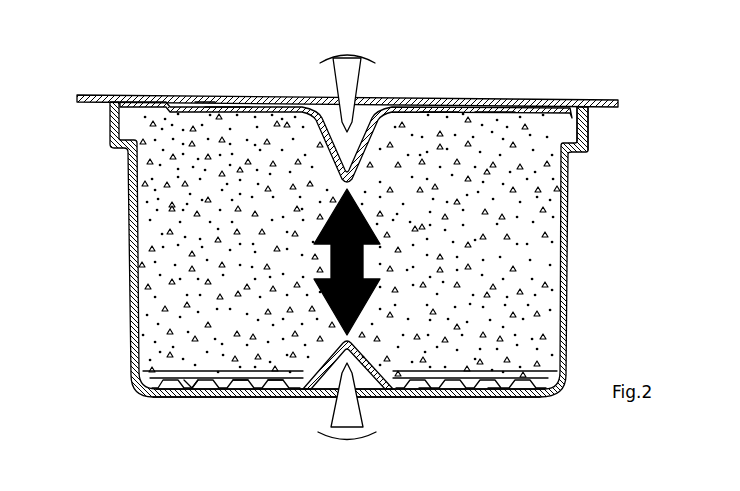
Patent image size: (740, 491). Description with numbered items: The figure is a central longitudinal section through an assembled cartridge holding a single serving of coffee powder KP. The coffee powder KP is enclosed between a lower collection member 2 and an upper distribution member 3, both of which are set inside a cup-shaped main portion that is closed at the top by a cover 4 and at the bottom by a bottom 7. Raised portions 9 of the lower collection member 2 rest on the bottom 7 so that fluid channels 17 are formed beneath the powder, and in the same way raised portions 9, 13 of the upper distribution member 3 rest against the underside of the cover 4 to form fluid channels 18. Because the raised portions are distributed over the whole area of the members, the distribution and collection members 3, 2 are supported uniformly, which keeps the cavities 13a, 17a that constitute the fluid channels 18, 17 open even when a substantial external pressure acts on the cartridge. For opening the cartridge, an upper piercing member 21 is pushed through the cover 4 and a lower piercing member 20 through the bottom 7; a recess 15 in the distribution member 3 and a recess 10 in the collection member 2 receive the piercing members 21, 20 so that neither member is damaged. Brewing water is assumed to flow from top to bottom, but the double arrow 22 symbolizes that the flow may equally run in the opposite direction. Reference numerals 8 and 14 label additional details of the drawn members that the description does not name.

The lower collection member 2 is at (170, 397).
The upper distribution member 3 is at (188, 95).
The cover 4 is at (205, 95).
The bottom 7 is at (510, 400).
The bottom ribs 8 is at (247, 397).
The raised portions 9 is at (430, 399).
The recess 10 is at (314, 363).
The raised portions 13 is at (300, 102).
The cavities 13a is at (243, 105).
The filter layer 14 is at (513, 107).
The recess 15 is at (315, 137).
The fluid channels 17 is at (467, 400).
The cavities 17a is at (208, 393).
The fluid channels 18 is at (452, 100).
The lower piercing member 20 is at (352, 416).
The upper piercing member 21 is at (348, 78).
The double arrow 22 is at (330, 260).
The coffee powder KP is at (527, 253).